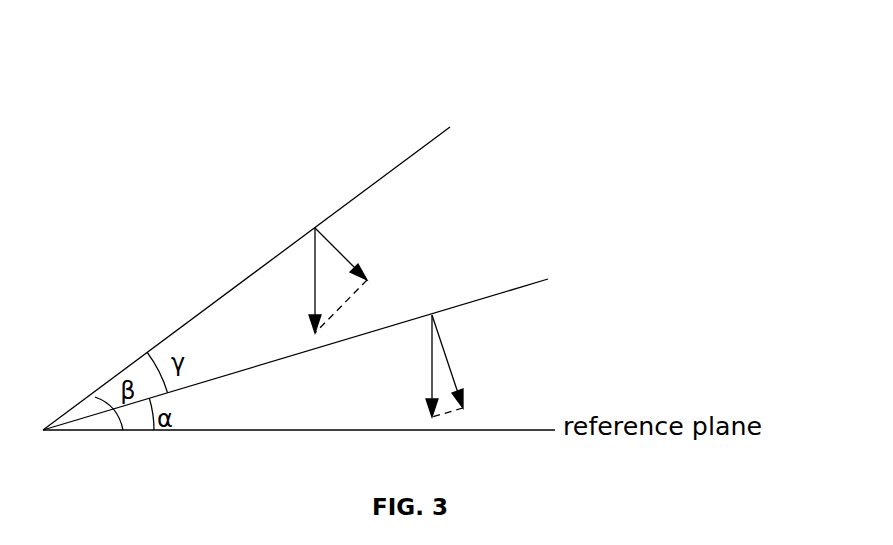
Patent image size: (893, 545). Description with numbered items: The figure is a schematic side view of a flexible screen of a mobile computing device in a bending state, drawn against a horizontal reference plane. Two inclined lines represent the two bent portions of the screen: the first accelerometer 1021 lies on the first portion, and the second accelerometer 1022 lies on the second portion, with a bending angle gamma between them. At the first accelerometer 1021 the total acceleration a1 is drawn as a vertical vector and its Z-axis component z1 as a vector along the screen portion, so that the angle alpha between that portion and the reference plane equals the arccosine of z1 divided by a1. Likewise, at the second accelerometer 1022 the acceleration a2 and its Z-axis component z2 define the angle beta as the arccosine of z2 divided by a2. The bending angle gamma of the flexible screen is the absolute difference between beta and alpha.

The second accelerometer 1022 is at (432, 131).
The first accelerometer 1021 is at (520, 285).
The acceleration of the first accelerometer a1 is at (413, 366).
The acceleration component in Z-axis direction of a1 z1 is at (456, 366).
The acceleration of the second accelerometer a2 is at (294, 280).
The acceleration component in Z-axis direction of a2 z2 is at (344, 274).